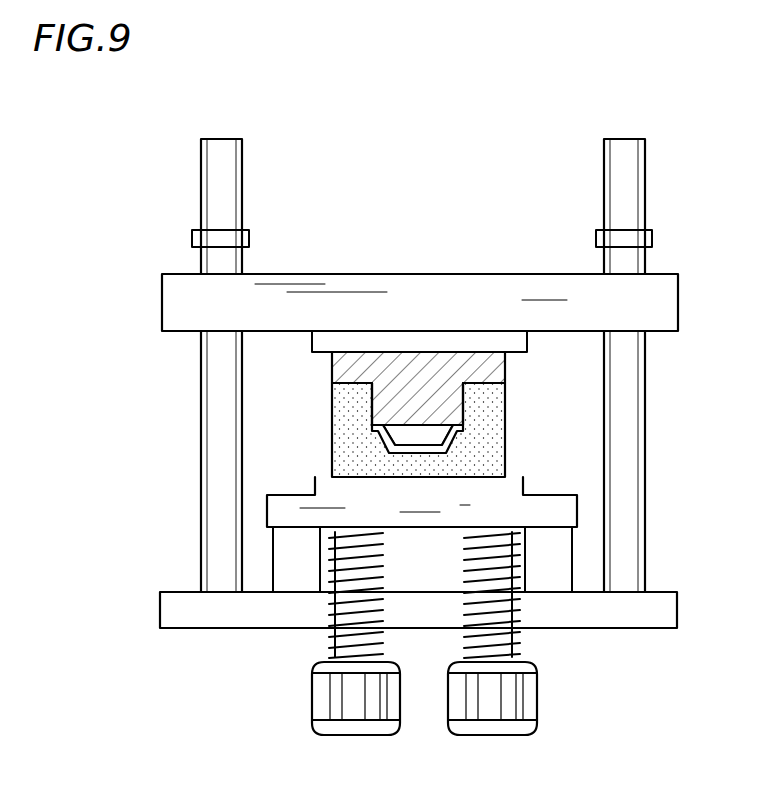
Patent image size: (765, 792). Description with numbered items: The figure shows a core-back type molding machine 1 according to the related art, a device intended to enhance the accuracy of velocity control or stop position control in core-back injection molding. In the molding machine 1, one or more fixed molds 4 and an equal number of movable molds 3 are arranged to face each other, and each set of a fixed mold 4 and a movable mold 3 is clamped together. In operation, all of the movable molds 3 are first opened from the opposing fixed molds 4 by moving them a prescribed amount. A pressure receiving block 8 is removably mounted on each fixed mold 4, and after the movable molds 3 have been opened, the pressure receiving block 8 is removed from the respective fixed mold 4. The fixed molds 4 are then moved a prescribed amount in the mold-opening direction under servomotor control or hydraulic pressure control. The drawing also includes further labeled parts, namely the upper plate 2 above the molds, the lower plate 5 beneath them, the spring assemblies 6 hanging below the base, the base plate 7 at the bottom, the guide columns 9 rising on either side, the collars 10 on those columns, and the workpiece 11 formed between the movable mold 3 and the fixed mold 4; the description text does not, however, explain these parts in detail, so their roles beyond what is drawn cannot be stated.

The molding machine 1 is at (362, 193).
The upper plate 2 is at (443, 290).
The movable mold 3 is at (495, 366).
The fixed mold 4 is at (498, 442).
The lower plate / die holder 5 is at (530, 497).
The spring with bolt 6 is at (325, 634).
The base plate 7 is at (665, 607).
The pressure receiving block 8 is at (298, 560).
The guide column 9 is at (212, 193).
The stopper collar 10 is at (246, 237).
The workpiece 11 is at (384, 438).